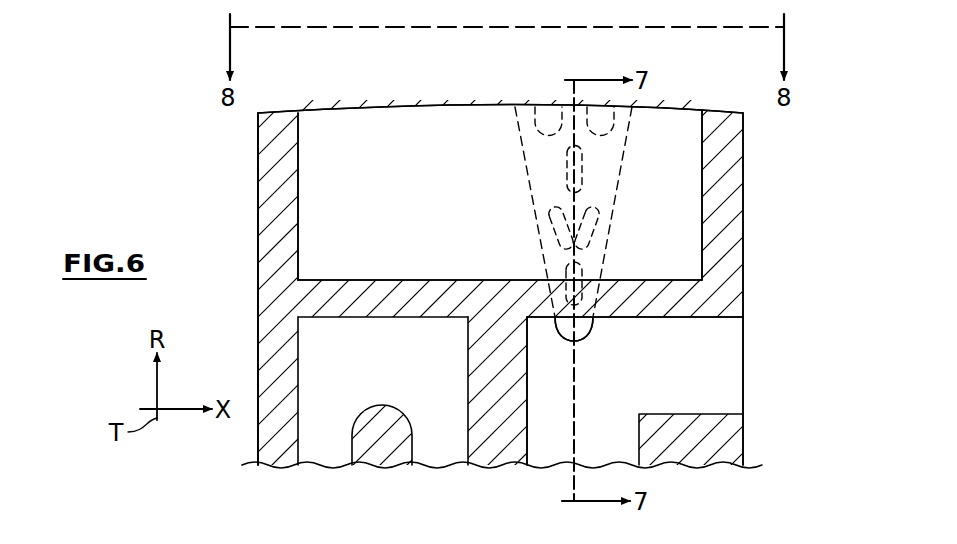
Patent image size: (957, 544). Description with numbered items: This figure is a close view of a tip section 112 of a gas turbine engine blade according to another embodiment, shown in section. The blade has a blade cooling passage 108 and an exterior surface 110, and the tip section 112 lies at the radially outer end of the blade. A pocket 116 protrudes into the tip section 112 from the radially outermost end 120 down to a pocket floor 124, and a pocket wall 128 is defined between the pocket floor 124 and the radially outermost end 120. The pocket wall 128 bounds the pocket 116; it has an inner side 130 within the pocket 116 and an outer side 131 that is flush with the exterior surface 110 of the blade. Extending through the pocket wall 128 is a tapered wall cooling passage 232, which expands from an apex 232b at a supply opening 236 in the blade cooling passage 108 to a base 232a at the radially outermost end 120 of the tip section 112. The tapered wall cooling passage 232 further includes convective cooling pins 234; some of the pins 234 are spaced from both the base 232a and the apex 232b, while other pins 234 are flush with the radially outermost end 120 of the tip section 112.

The blade cooling passage 108 is at (710, 375).
The exterior surface 110 is at (258, 266).
The tip section 112 is at (236, 145).
The pocket 116 is at (399, 189).
The radially outermost end 120 is at (388, 106).
The pocket floor 124 is at (443, 280).
The pocket wall 128 is at (283, 189).
The inner side 130 is at (298, 228).
The outer side 131 is at (743, 197).
The tapered wall cooling passage 232 is at (538, 198).
The base 232a is at (525, 106).
The apex 232b is at (583, 344).
The convective cooling pins 234 is at (612, 125).
The supply opening 236 is at (585, 338).